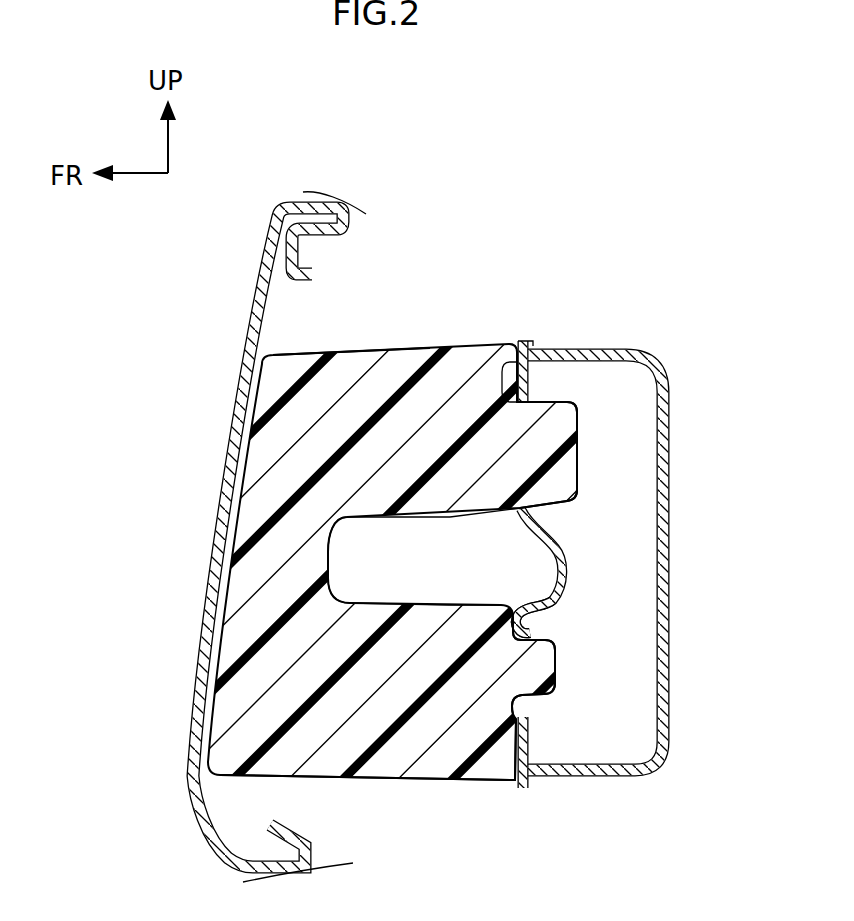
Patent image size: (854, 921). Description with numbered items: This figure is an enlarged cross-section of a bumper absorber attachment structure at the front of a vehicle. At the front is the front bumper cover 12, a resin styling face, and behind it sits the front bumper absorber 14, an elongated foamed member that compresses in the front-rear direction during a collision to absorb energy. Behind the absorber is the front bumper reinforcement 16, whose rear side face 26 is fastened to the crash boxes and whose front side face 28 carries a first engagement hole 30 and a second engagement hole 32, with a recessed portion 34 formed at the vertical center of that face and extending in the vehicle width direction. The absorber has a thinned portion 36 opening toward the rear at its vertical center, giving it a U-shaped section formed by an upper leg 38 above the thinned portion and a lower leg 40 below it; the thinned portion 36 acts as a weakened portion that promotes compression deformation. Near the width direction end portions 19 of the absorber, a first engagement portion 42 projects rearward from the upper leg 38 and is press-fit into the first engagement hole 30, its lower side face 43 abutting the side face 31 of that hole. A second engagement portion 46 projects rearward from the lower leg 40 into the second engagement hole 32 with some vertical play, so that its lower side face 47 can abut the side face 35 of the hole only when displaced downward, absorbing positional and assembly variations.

The front bumper cover 12 is at (229, 409).
The front bumper absorber 14 is at (400, 477).
The front bumper reinforcement 16 is at (628, 525).
The end portions 19 is at (303, 366).
The side face 26 is at (670, 480).
The side face 28 is at (503, 390).
The first engagement hole 30 is at (540, 404).
The side face 31 is at (552, 512).
The second engagement hole 32 is at (543, 627).
The recessed portion 34 is at (545, 578).
The side face 35 is at (530, 713).
The thinned portion 36 is at (410, 578).
The upper leg 38 is at (462, 363).
The lower leg 40 is at (381, 783).
The first engagement portion 42 is at (563, 414).
The vehicle lower side face 43 is at (574, 568).
The second engagement portion 46 is at (552, 642).
The vehicle lower side face 47 is at (550, 702).